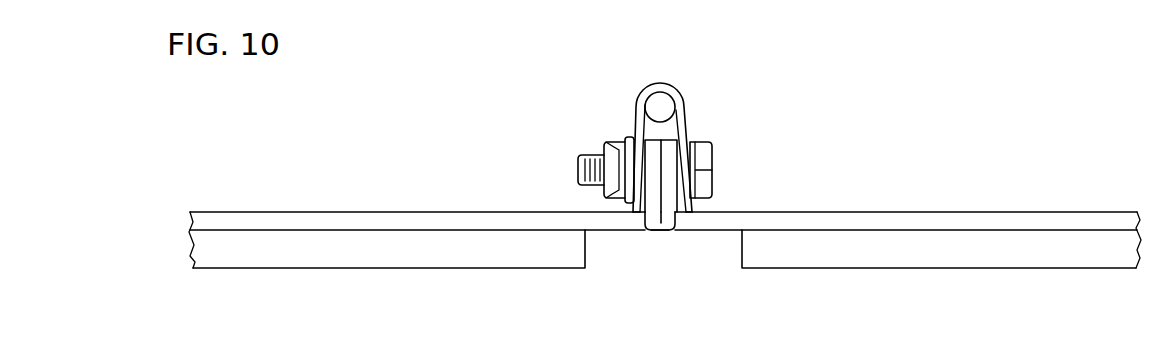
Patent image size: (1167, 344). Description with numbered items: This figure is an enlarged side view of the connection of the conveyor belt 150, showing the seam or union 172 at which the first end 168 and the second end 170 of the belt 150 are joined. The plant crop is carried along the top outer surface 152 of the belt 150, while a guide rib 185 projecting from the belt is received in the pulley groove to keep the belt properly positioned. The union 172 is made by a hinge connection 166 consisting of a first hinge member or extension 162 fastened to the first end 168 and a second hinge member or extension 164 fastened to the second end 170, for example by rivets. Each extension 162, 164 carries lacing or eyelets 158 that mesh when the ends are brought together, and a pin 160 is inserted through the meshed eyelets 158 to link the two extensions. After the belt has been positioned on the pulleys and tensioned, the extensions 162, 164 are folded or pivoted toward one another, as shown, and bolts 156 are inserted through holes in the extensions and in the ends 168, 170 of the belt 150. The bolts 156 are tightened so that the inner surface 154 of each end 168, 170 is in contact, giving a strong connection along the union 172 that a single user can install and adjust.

The conveyor belt 150 is at (864, 89).
The top outer surface 152 is at (380, 212).
The inner surface 154 is at (661, 224).
The bolts 156 is at (712, 172).
The eyelets 158 is at (642, 119).
The pin 160 is at (634, 87).
The first hinge member or extension 162 is at (640, 188).
The second hinge member or extension 164 is at (687, 187).
The hinge connection 166 is at (671, 117).
The first end 168 is at (650, 168).
The second end 170 is at (670, 160).
The seam or union 172 is at (671, 259).
The guide rib 185 is at (858, 269).